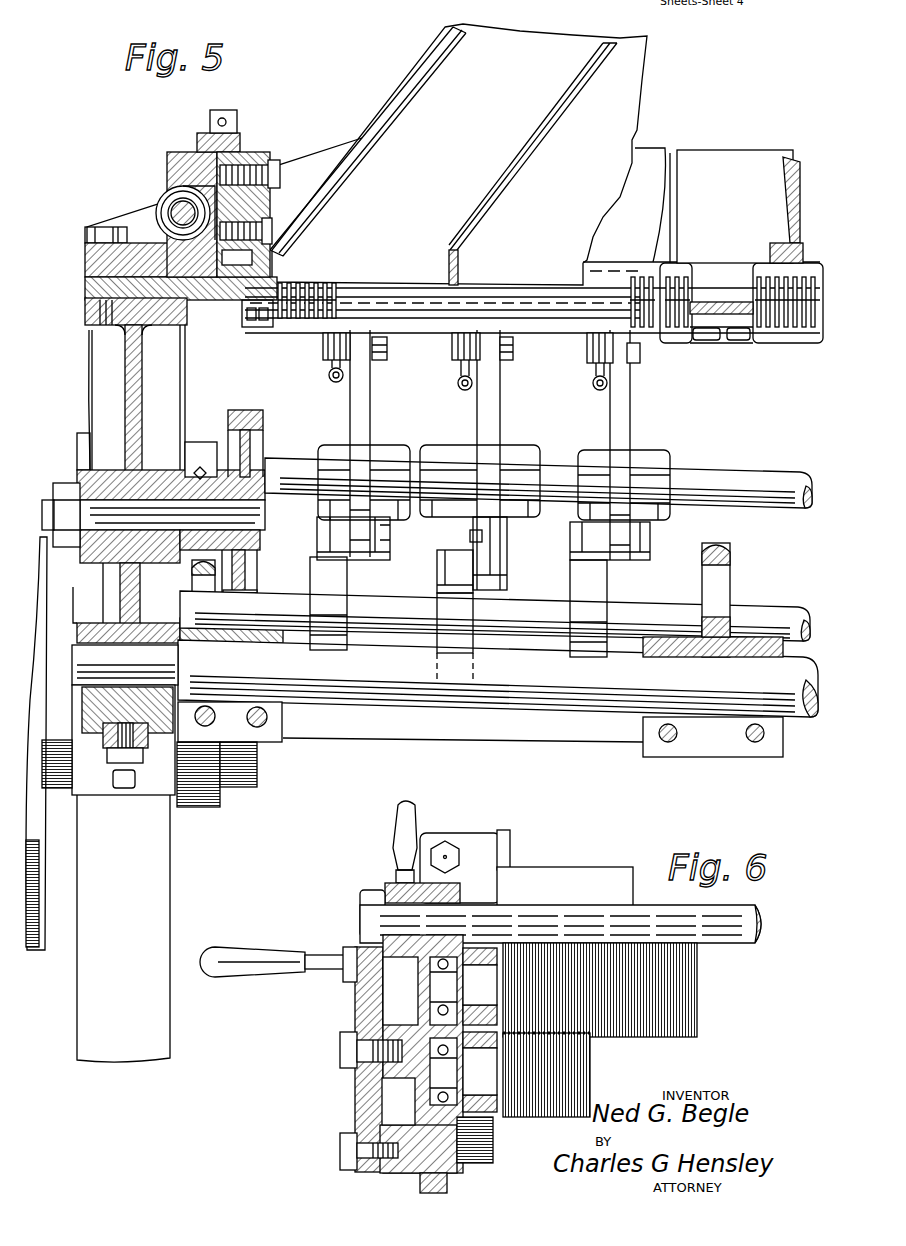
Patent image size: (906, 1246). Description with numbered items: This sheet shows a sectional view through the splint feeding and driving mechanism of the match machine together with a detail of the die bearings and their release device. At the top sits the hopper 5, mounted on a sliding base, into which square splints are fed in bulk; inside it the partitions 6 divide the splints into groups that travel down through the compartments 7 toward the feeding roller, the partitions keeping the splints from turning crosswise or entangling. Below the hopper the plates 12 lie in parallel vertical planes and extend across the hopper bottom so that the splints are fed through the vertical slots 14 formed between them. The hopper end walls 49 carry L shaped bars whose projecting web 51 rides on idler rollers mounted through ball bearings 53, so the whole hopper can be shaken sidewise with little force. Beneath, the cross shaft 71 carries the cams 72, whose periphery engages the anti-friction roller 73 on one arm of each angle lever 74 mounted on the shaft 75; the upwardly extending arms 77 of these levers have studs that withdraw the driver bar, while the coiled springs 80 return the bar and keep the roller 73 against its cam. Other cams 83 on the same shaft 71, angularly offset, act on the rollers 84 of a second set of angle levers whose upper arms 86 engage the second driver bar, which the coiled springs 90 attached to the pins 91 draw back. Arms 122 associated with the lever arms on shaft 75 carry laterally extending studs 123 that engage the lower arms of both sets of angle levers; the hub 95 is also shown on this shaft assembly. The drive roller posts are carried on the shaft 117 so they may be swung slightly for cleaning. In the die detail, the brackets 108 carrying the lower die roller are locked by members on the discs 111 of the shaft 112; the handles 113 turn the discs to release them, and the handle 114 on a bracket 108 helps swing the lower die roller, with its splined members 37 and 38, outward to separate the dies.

In FIG. 5, the hopper 5 is at (405, 90).
In FIG. 5, the partitions 6 is at (478, 222).
In FIG. 5, the compartments 7 is at (497, 40).
In FIG. 5, the plates 12 is at (340, 292).
In FIG. 5, the vertical slots 14 is at (305, 285).
In FIG. 6, the splined pinion 37 is at (592, 1090).
In FIG. 6, the splined gear 38 is at (700, 1003).
In FIG. 5, the end walls 49 is at (265, 152).
In FIG. 5, the web 51 is at (181, 155).
In FIG. 5, the ball bearings 53 is at (165, 213).
In FIG. 5, the shaft 71 is at (640, 607).
In FIG. 5, the cam 72 is at (340, 597).
In FIG. 5, the anti-friction roller 73 is at (325, 560).
In FIG. 5, the angle lever 74 is at (360, 508).
In FIG. 5, the shaft 75 is at (693, 472).
In FIG. 5, the upwardly extending arms 77 is at (371, 423).
In FIG. 5, the coiled springs 80 is at (354, 371).
In FIG. 5, the cams 83 is at (455, 636).
In FIG. 5, the rollers 84 is at (455, 572).
In FIG. 5, the upper arms 86 is at (501, 417).
In FIG. 5, the coiled springs 90 is at (465, 388).
In FIG. 5, the pins 91 is at (462, 360).
In FIG. 5, the hub 95 is at (162, 526).
In FIG. 6, the brackets 108 is at (357, 1010).
In FIG. 6, the discs 111 is at (404, 962).
In FIG. 6, the shaft 112 is at (560, 924).
In FIG. 6, the handles 113 is at (420, 823).
In FIG. 6, the handle 114 is at (280, 957).
In FIG. 5, the shaft 117 is at (498, 691).
In FIG. 5, the arms 122 is at (392, 548).
In FIG. 5, the studs 123 is at (473, 535).